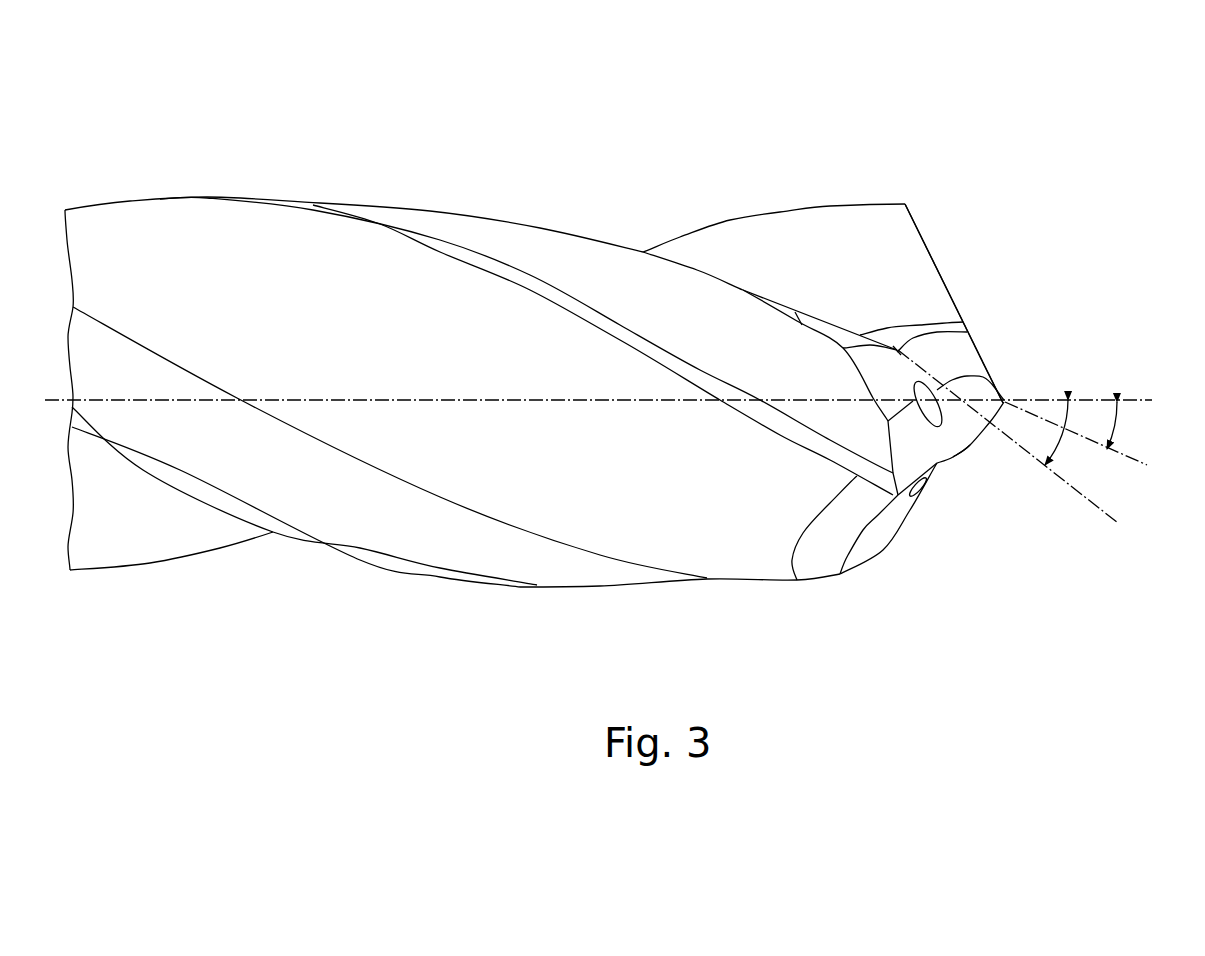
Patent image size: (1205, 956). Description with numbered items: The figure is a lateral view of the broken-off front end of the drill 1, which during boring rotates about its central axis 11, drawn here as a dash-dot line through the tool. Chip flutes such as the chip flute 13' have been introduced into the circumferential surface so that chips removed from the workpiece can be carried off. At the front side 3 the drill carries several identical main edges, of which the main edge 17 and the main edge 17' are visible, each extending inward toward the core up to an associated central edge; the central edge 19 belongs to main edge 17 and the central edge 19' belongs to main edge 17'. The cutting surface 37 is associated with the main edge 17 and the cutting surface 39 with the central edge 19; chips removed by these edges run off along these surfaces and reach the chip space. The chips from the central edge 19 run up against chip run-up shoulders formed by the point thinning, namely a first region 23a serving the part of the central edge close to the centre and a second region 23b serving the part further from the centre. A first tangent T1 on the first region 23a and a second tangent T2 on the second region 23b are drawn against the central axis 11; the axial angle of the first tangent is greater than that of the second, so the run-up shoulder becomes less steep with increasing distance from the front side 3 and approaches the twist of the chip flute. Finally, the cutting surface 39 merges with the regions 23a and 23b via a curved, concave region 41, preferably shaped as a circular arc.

The drill 1 is at (415, 125).
The main edge 17 is at (960, 302).
The cutting surface 37 is at (847, 267).
The cutting surface 39 is at (958, 363).
The chip flute 13' is at (465, 443).
The second region 23b is at (958, 332).
The central edge 19 is at (1019, 342).
The first region 23a is at (983, 372).
The curved, concave region 41 is at (1010, 405).
The central axis 11 is at (1103, 397).
The central edge 19' is at (1000, 455).
The front side 3 is at (966, 453).
The main edge 17' is at (923, 518).
The first tangent T1 is at (1102, 515).
The second tangent T2 is at (1138, 457).